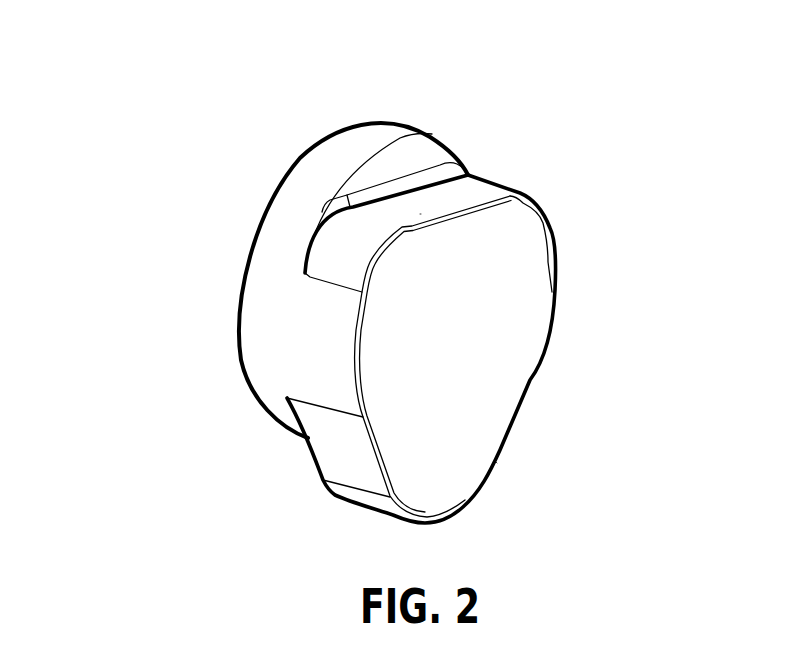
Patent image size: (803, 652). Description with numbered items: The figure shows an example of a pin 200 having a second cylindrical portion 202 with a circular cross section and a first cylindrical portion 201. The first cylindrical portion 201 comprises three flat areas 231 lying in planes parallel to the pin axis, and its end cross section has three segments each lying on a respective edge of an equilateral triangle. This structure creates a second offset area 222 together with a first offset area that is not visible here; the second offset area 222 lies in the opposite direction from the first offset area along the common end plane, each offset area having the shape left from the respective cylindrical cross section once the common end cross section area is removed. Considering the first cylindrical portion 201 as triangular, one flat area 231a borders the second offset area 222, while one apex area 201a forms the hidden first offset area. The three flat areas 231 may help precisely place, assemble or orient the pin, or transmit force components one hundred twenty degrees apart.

The pin 200 is at (205, 178).
The second cylindrical portion 202 is at (323, 141).
The second offset area 222 is at (427, 140).
The flat area 231a is at (436, 197).
The first cylindrical portion 201 is at (528, 231).
The flat areas 231 is at (467, 224).
The apex area 201a is at (467, 478).